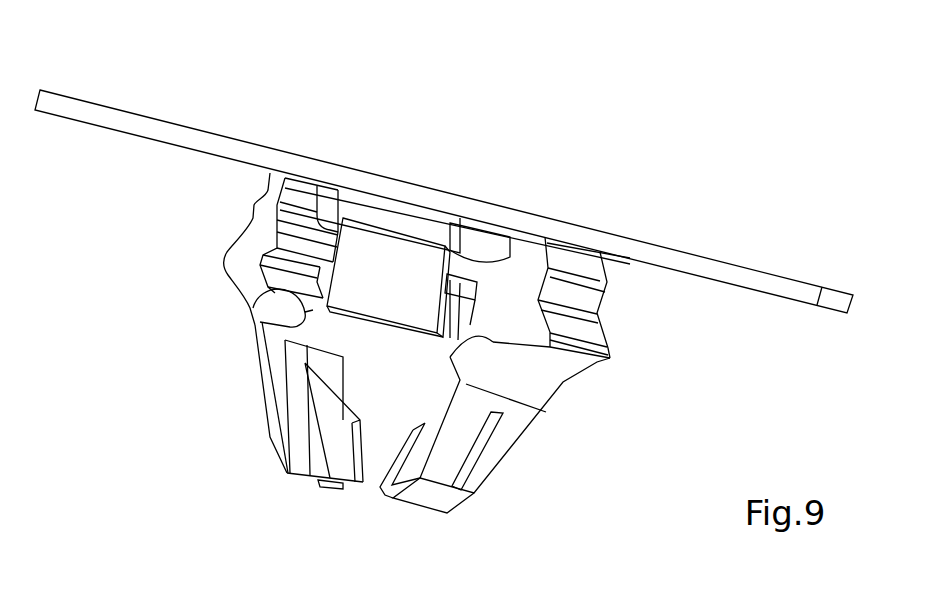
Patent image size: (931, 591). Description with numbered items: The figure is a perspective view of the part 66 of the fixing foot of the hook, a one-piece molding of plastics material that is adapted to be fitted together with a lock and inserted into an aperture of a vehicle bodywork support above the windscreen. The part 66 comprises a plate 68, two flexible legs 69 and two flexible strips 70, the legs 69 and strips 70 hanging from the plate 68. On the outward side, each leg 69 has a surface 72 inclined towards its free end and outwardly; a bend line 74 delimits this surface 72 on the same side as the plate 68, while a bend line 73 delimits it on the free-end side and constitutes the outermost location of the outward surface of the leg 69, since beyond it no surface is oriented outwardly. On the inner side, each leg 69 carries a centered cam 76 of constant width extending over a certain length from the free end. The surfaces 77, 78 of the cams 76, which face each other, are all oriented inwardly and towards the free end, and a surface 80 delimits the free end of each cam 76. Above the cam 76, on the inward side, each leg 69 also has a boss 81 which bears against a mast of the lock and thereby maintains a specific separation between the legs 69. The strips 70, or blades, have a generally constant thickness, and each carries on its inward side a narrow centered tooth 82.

The part 66 is at (232, 83).
The plate 68 is at (683, 258).
The flexible legs 69 is at (229, 205).
The flexible strips 70 is at (370, 238).
The surface 72 is at (574, 330).
The bend line 73 is at (608, 357).
The bend line 74 is at (578, 312).
The cam 76 is at (335, 440).
The surface 77 is at (325, 380).
The surface 78 is at (363, 478).
The surface 80 is at (337, 486).
The boss 81 is at (253, 308).
The tooth 82 is at (438, 313).